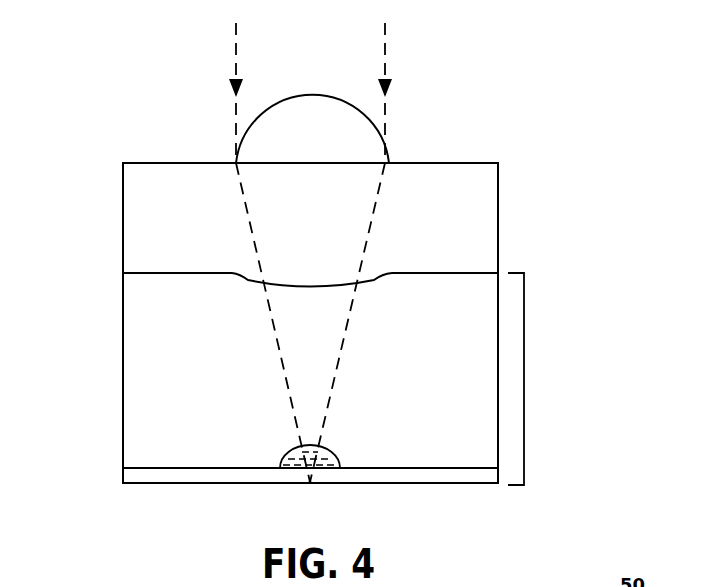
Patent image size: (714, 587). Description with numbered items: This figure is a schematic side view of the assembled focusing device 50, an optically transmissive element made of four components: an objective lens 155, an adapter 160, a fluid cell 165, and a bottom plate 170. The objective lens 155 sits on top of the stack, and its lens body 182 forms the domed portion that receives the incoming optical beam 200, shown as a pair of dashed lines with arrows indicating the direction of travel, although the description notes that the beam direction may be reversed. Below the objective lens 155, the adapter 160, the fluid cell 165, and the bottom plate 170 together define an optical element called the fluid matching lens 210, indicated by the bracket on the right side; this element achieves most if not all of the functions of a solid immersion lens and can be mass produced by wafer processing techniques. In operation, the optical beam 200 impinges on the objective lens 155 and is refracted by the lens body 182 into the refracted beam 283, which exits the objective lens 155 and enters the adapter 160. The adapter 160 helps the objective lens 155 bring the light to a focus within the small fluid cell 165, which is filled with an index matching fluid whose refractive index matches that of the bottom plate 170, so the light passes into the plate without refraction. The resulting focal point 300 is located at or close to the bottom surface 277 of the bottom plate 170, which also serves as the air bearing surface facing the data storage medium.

The focusing device 50 is at (322, 30).
The objective lens 155 is at (503, 185).
The adapter 160 is at (120, 369).
The fluid cell 165 is at (340, 453).
The bottom plate 170 is at (462, 488).
The body 182 is at (272, 113).
The optical beam 200 is at (385, 50).
The fluid matching lens 210 is at (539, 388).
The bottom surface 277 is at (155, 486).
The refracted beam 283 is at (243, 212).
The focal point 300 is at (310, 482).